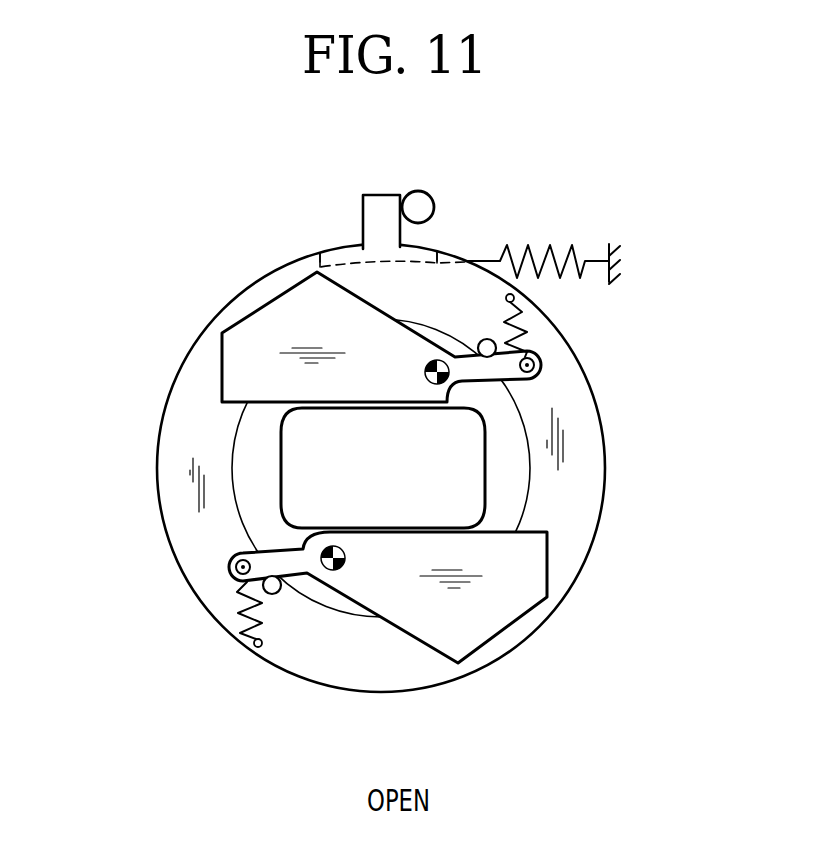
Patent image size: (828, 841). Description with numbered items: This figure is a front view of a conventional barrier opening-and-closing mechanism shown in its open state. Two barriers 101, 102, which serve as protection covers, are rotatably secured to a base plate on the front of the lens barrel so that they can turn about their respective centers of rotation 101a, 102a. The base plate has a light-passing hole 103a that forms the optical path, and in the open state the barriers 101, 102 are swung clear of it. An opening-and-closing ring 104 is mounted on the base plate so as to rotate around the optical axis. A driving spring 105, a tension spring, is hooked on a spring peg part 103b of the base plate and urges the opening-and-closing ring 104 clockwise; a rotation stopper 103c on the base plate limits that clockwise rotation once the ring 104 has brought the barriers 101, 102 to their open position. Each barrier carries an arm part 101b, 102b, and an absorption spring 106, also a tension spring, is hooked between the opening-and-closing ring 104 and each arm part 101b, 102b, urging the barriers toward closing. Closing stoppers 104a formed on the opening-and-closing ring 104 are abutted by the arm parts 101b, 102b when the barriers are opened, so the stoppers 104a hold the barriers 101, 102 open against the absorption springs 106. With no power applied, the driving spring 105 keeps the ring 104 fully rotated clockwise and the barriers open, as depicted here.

The barrier 101 is at (250, 328).
The center of rotation 101a is at (445, 380).
The arm part 101b is at (535, 380).
The barrier 102 is at (502, 623).
The center of rotation 102a is at (337, 572).
The arm part 102b is at (253, 545).
The light-passing hole 103a is at (472, 480).
The spring peg part 103b is at (618, 258).
The rotation stopper 103c is at (418, 200).
The opening-and-closing ring 104 is at (185, 395).
The closing stopper 104a is at (485, 340).
The driving spring 105 is at (551, 246).
The absorption spring 106 is at (537, 322).